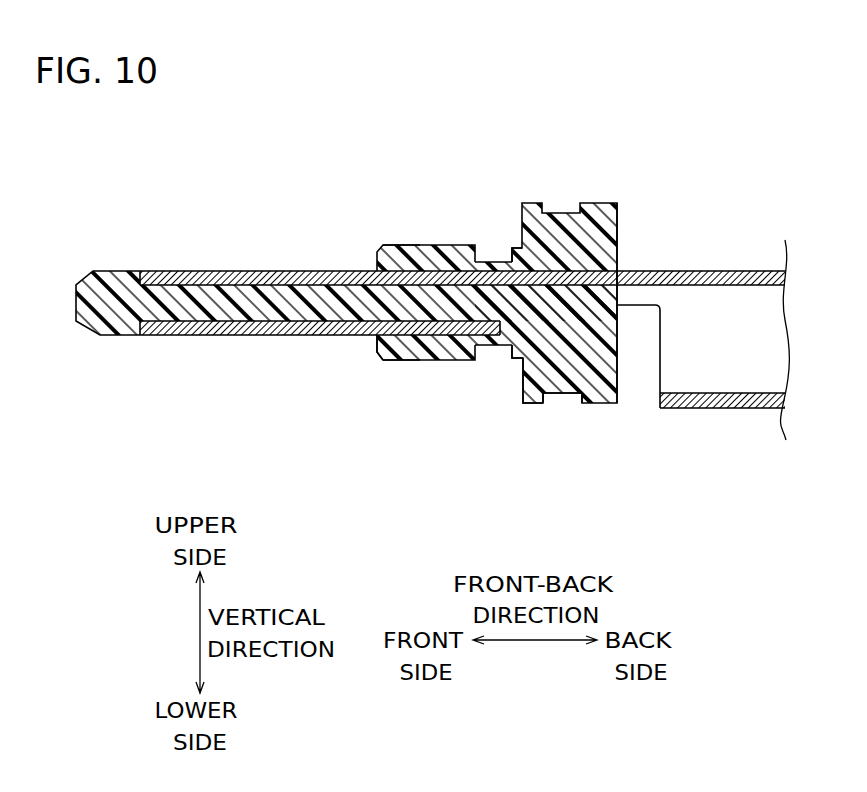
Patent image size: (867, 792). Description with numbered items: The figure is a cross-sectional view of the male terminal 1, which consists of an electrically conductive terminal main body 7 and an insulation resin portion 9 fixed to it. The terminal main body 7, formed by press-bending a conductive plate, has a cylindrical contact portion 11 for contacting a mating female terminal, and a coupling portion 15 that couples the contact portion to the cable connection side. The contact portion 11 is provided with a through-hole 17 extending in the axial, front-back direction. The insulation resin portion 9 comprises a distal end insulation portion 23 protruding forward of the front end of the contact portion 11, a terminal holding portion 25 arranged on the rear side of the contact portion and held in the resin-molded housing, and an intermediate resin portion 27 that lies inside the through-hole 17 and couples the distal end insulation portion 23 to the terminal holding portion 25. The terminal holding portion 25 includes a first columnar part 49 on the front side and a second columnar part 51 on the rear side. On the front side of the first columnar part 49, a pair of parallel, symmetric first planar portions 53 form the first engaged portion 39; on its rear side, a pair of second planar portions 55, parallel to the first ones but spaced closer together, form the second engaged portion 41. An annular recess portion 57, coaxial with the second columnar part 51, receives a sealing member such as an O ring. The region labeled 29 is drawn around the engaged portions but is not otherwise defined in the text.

The male terminal 1 is at (430, 300).
The terminal main body 7 is at (462, 296).
The insulation resin portion 9 is at (223, 327).
The contact portion 11 is at (185, 270).
The coupling portion 15 is at (583, 212).
The through-hole 17 is at (346, 344).
The distal end insulation portion 23 is at (110, 328).
The terminal holding portion 25 is at (527, 404).
The intermediate resin portion 27 is at (300, 322).
The engaging portion 29 is at (497, 290).
The first engaged portion 39 is at (395, 244).
The second engaged portion 41 is at (503, 262).
The first columnar part 49 is at (377, 352).
The second columnar part 51 is at (617, 242).
The first planar portions 53 is at (427, 244).
The second planar portions 55 is at (482, 262).
The annular recess portion 57 is at (565, 396).